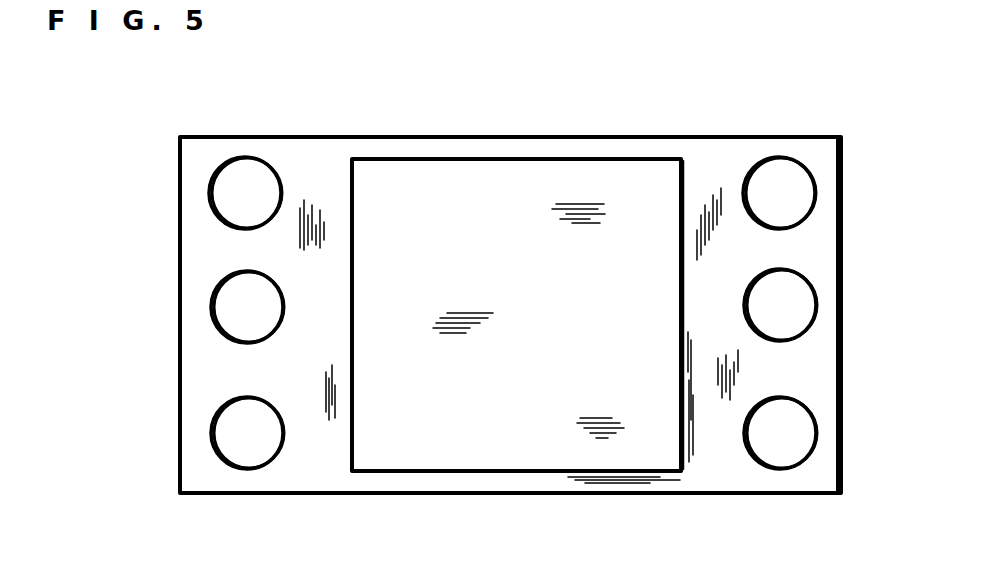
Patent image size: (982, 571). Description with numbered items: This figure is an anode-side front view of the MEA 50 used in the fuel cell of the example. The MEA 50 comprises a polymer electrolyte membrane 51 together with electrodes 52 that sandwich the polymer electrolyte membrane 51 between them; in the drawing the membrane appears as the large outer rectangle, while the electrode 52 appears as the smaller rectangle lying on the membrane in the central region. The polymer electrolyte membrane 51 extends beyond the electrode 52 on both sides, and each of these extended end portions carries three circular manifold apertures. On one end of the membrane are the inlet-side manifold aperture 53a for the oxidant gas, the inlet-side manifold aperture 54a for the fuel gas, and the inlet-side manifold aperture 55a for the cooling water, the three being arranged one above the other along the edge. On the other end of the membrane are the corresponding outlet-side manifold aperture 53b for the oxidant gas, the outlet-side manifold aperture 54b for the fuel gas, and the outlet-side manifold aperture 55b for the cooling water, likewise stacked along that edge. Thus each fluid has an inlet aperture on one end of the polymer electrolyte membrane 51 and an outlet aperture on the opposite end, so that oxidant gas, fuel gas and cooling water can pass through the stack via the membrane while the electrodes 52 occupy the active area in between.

The MEA 50 is at (462, 130).
The polymer electrolyte membrane 51 is at (610, 156).
The electrodes 52 is at (505, 453).
The inlet-side manifold aperture for the oxidant gas 53a is at (780, 190).
The outlet-side manifold aperture for the oxidant gas 53b is at (245, 192).
The inlet-side manifold aperture for the fuel gas 54a is at (778, 452).
The outlet-side manifold aperture for the fuel gas 54b is at (250, 455).
The inlet-side manifold aperture for the cooling water 55a is at (786, 316).
The outlet-side manifold aperture for the cooling water 55b is at (236, 308).